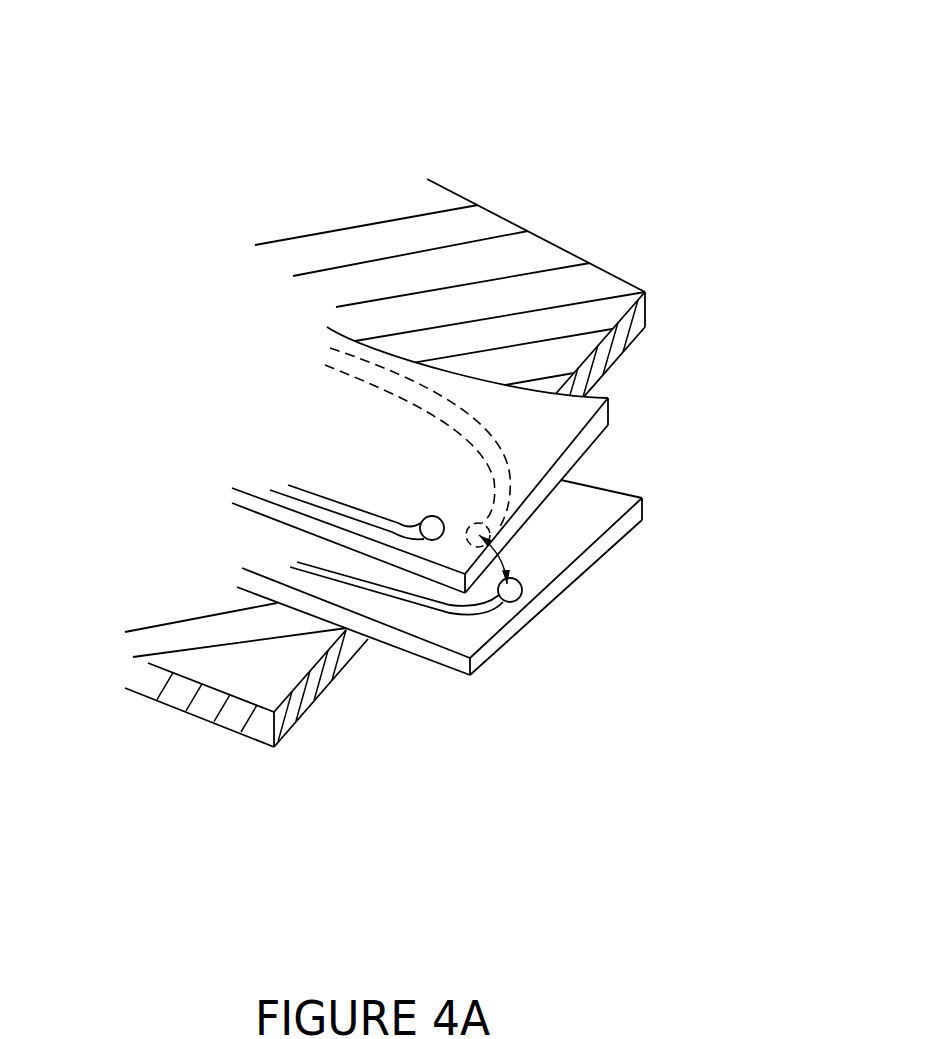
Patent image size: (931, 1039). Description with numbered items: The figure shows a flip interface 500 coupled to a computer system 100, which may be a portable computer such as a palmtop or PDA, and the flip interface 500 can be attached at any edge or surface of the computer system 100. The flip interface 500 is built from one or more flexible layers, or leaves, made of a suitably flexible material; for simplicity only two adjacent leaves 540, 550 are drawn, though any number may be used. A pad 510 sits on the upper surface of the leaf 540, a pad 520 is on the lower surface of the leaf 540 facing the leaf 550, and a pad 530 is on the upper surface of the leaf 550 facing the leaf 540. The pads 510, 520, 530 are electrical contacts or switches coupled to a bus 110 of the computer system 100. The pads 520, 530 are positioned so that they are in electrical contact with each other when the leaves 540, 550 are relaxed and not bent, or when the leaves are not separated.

The flip interface 500 is at (45, 34).
The computer system 100 is at (574, 250).
The bus 110 is at (332, 356).
The leaf 540 is at (608, 423).
The leaf 550 is at (641, 511).
The pad 510 is at (430, 516).
The pad 520 is at (509, 528).
The pad 530 is at (509, 604).